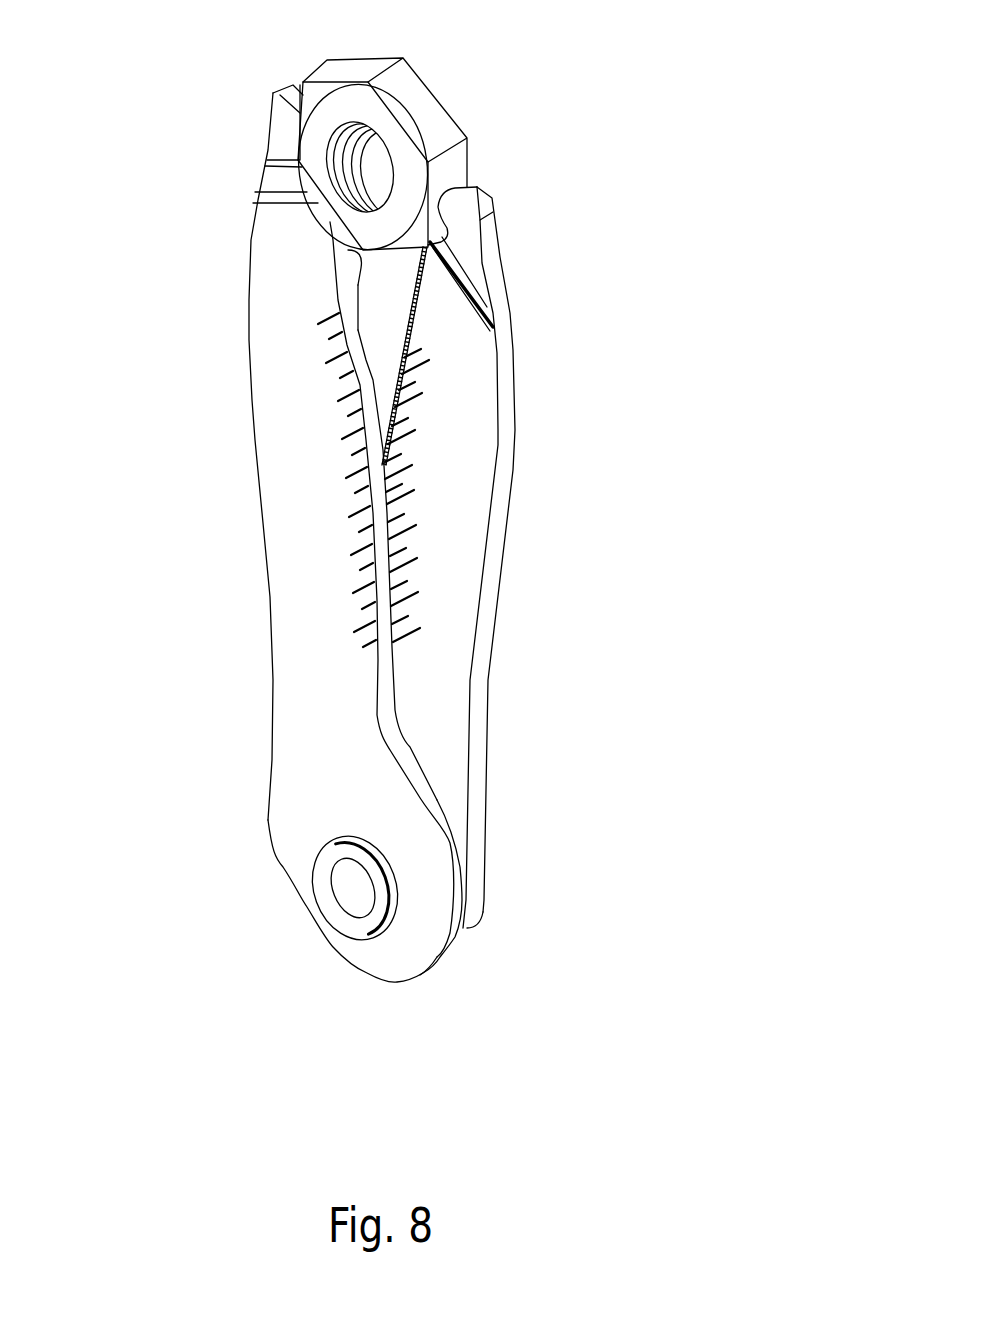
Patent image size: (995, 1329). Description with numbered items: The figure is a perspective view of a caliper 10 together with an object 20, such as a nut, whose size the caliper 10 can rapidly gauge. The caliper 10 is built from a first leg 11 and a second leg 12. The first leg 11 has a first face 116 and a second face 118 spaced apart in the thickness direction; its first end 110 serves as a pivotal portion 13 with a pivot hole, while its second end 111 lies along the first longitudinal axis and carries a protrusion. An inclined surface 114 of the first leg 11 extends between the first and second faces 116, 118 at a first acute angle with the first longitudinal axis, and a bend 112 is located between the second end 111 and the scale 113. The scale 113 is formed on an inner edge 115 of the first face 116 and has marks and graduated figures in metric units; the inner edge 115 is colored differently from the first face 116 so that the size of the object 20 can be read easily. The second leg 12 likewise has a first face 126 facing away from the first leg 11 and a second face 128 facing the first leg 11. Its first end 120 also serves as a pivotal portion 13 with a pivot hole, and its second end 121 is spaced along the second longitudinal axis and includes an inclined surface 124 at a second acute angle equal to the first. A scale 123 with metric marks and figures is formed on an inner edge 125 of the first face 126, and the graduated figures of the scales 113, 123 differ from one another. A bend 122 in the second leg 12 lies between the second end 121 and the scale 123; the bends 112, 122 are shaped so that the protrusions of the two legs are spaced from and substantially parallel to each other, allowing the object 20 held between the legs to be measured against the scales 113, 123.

The caliper 10 is at (430, 571).
The first leg 11 is at (433, 688).
The second leg 12 is at (300, 707).
The pivotal portion 13 is at (402, 957).
The object 20 is at (415, 107).
The first end of first leg 110 is at (477, 923).
The second end of first leg 111 is at (468, 248).
The bend 112 is at (467, 283).
The scale 113 is at (455, 497).
The inclined surface 114 is at (487, 263).
The inner edge 115 is at (420, 317).
The first face of first leg 116 is at (460, 485).
The second face of first leg 118 is at (515, 452).
The first end of second leg 120 is at (360, 953).
The second end of second leg 121 is at (283, 135).
The bend 122 is at (282, 178).
The scale 123 is at (290, 467).
The inclined surface 124 is at (267, 146).
The inner edge 125 is at (347, 293).
The first face of second leg 126 is at (297, 587).
The second face of second leg 128 is at (347, 257).